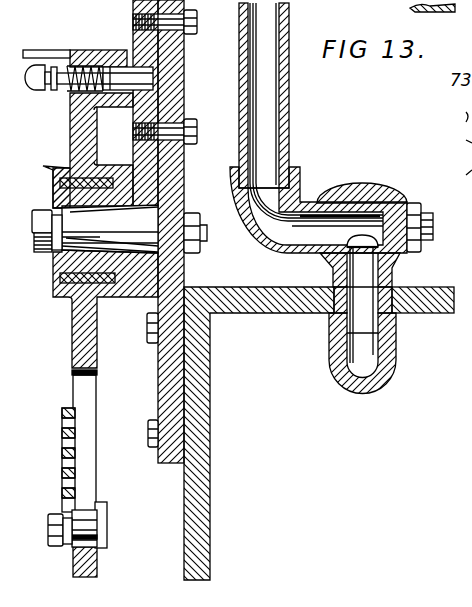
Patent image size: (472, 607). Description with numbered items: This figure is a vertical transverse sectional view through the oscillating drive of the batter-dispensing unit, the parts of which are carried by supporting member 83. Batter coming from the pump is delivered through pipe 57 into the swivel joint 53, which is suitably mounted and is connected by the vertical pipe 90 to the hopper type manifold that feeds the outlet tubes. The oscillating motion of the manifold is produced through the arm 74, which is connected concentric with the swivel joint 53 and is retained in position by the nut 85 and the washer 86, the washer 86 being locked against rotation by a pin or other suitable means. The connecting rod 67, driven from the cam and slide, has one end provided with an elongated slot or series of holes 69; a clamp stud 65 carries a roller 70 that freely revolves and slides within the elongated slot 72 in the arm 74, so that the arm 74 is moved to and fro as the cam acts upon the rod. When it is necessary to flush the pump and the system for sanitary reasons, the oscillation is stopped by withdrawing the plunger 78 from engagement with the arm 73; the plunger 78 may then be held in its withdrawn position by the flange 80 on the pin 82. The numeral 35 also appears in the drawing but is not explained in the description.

The adjacent figure part 35 is at (410, 8).
The swivel joint 53 is at (371, 186).
The pipe 57 is at (394, 352).
The clamp stud 65 is at (107, 513).
The connecting rod 67 is at (62, 413).
The elongated slot or series of holes 69 is at (63, 433).
The roller 70 is at (65, 538).
The elongated slot 72 is at (93, 405).
The arm 73 is at (185, 53).
The arm 74 is at (97, 338).
The plunger 78 is at (150, 80).
The flange 80 is at (95, 104).
The pin 82 is at (37, 49).
The supporting member 83 is at (208, 395).
The nut 85 is at (42, 253).
The washer 86 is at (55, 171).
The pipe 90 is at (289, 78).